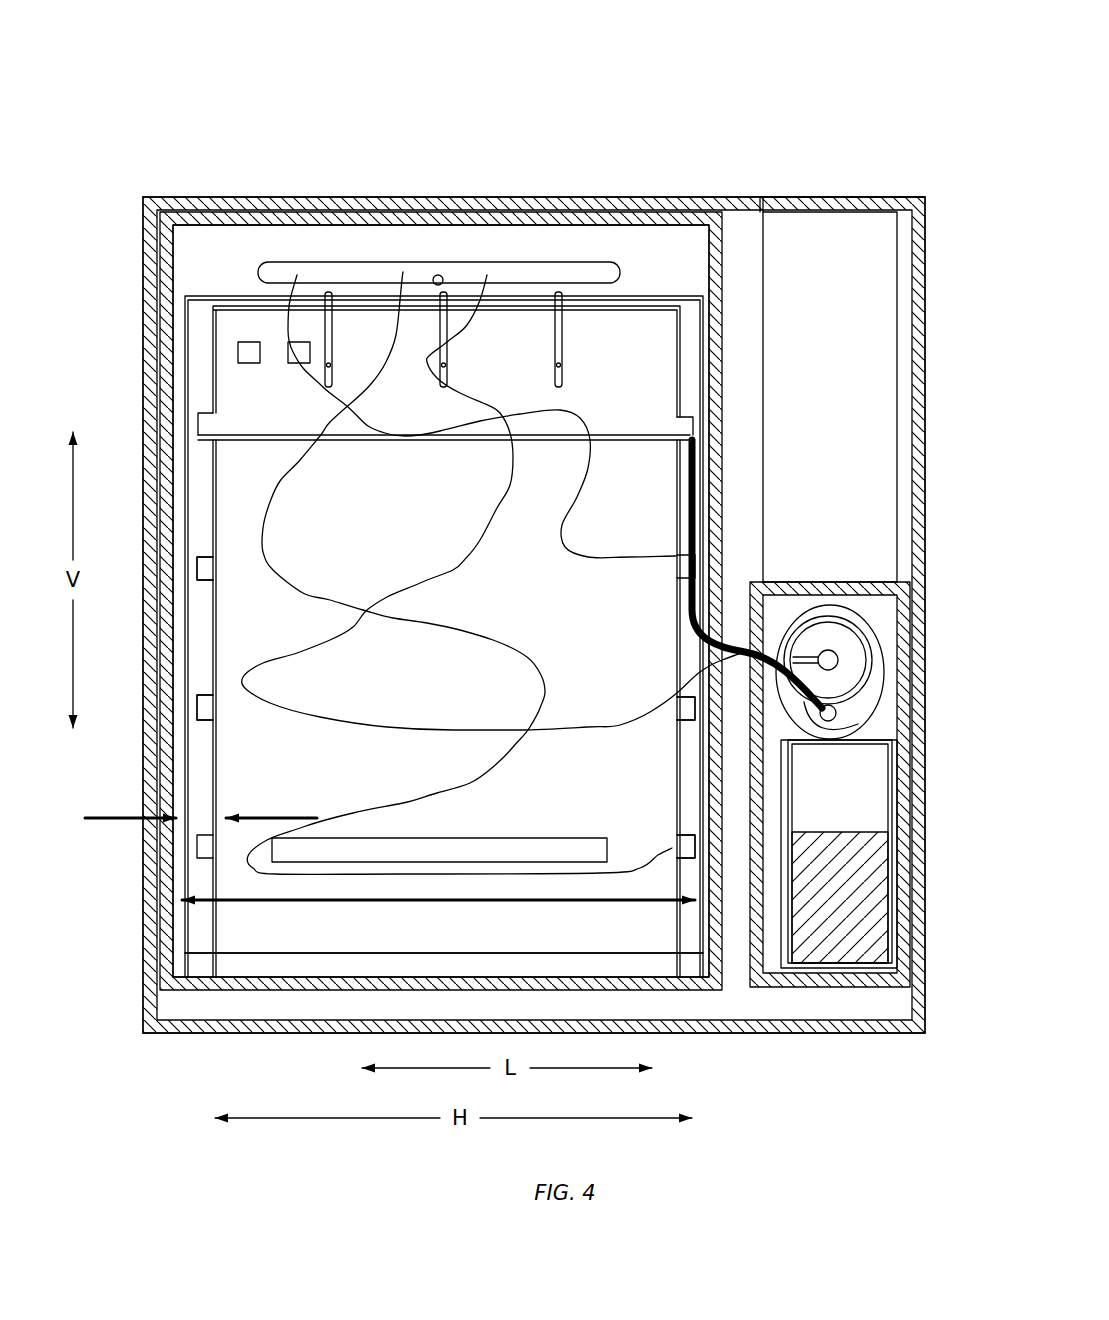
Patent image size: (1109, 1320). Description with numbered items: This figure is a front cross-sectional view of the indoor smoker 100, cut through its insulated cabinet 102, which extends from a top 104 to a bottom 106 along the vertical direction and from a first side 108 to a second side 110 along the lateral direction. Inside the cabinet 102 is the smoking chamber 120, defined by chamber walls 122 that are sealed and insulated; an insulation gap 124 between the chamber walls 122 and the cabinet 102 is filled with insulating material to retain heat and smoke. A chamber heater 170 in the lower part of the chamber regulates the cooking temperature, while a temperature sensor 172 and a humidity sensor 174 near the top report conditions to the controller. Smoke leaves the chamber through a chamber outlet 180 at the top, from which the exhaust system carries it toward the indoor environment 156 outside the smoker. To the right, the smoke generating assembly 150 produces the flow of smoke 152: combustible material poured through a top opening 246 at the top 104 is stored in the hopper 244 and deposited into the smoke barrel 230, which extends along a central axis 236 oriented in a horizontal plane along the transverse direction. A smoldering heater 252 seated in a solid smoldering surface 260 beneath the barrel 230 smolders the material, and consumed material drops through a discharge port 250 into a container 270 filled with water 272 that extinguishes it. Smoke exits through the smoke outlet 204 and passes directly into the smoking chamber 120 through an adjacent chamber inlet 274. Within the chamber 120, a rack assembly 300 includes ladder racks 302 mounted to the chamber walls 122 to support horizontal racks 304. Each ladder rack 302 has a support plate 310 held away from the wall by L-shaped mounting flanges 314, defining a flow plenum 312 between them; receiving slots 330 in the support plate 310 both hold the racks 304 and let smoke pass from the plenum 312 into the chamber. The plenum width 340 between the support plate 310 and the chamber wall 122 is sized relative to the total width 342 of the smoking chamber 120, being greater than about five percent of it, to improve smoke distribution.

The indoor smoker 100 is at (770, 115).
The cabinet 102 is at (147, 438).
The top 104 is at (225, 192).
The bottom 106 is at (200, 1040).
The first side 108 is at (143, 290).
The second side 110 is at (927, 290).
The smoking chamber 120 is at (393, 531).
The chamber walls 122 is at (165, 555).
The insulation gap 124 is at (153, 757).
The smoke generating assembly 150 is at (887, 682).
The flow of smoke 152 is at (497, 508).
The indoor environment 156 is at (598, 121).
The chamber heater 170 is at (420, 837).
The temperature sensor 172 is at (248, 365).
The humidity sensor 174 is at (312, 357).
The chamber outlet 180 is at (352, 270).
The smoke outlet 204 is at (845, 637).
The smoke barrel 230 is at (872, 643).
The central axis 236 is at (826, 648).
The hopper 244 is at (830, 397).
The top opening 246 is at (851, 192).
The discharge port 250 is at (833, 630).
The smoldering heater 252 is at (836, 712).
The smoldering surface 260 is at (787, 703).
The container 270 is at (895, 813).
The water 272 is at (858, 887).
The chamber inlet 274 is at (732, 647).
The rack assembly 300 is at (612, 630).
The ladder racks 302 is at (225, 779).
The racks 304 is at (345, 440).
The support plate 310 is at (218, 622).
The flow plenum 312 is at (195, 667).
The mounting flanges 314 is at (203, 915).
The receiving slots 330 is at (222, 565).
The plenum width 340 is at (113, 816).
The total width 342 is at (440, 903).